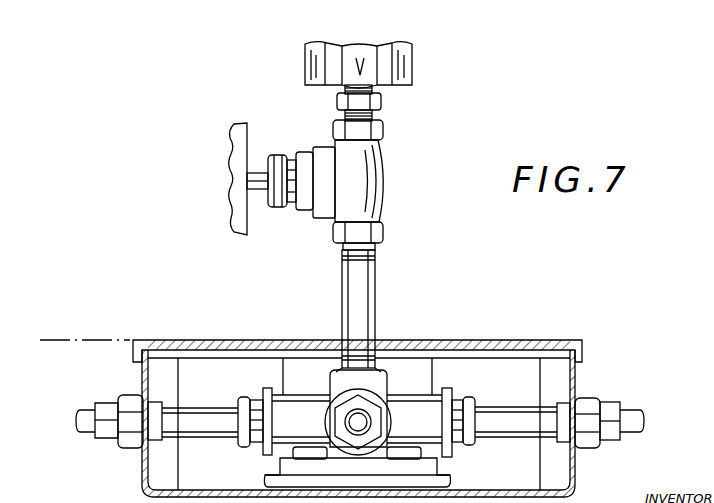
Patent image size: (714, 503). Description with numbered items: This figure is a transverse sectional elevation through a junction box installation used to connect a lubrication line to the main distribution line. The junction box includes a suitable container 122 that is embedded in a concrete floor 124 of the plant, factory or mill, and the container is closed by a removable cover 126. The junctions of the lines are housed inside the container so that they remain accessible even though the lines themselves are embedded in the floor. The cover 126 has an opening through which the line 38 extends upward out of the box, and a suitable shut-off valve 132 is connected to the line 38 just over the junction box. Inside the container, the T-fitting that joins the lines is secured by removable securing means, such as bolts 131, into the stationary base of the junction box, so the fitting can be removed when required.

The shut-off valve 132 is at (380, 180).
The line 38 is at (360, 268).
The concrete floor 124 is at (86, 338).
The removable cover 126 is at (533, 320).
The container 122 is at (138, 473).
The bolts 131 is at (437, 458).